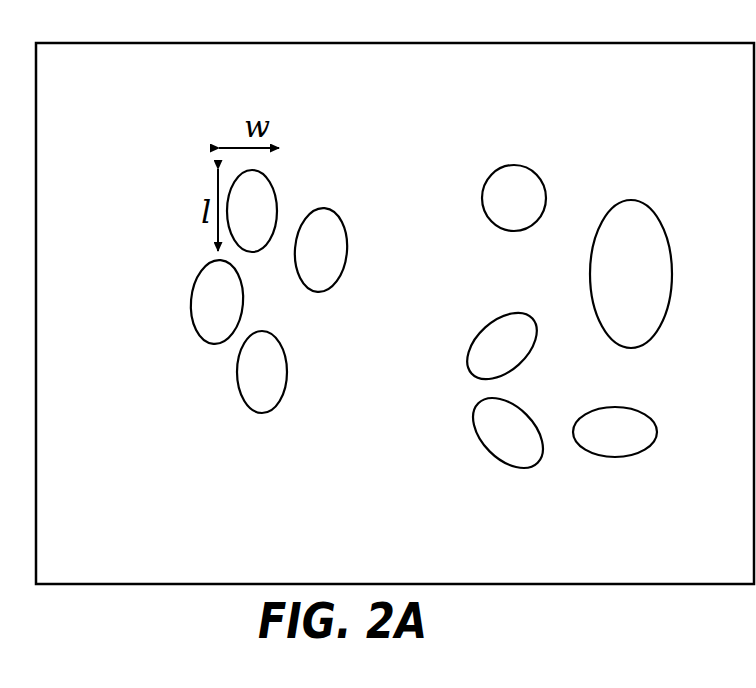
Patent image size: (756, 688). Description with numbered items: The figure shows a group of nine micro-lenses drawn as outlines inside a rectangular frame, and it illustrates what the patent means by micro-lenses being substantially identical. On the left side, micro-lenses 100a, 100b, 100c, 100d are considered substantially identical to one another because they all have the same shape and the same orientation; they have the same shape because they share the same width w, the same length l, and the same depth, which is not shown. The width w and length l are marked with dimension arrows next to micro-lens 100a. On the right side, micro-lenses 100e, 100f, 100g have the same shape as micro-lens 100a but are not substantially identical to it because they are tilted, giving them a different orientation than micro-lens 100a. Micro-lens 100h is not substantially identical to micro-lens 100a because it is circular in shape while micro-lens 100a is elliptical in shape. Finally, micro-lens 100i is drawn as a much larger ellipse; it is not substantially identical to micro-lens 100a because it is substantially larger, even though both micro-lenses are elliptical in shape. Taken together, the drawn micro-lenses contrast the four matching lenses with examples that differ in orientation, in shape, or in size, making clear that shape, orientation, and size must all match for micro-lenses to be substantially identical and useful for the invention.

The micro-lens 100a is at (248, 187).
The micro-lens 100b is at (183, 287).
The micro-lens 100c is at (216, 372).
The micro-lens 100d is at (320, 221).
The micro-lens 100e is at (608, 477).
The micro-lens 100f is at (497, 455).
The micro-lens 100g is at (483, 372).
The micro-lens 100h is at (487, 174).
The micro-lens 100i is at (638, 236).